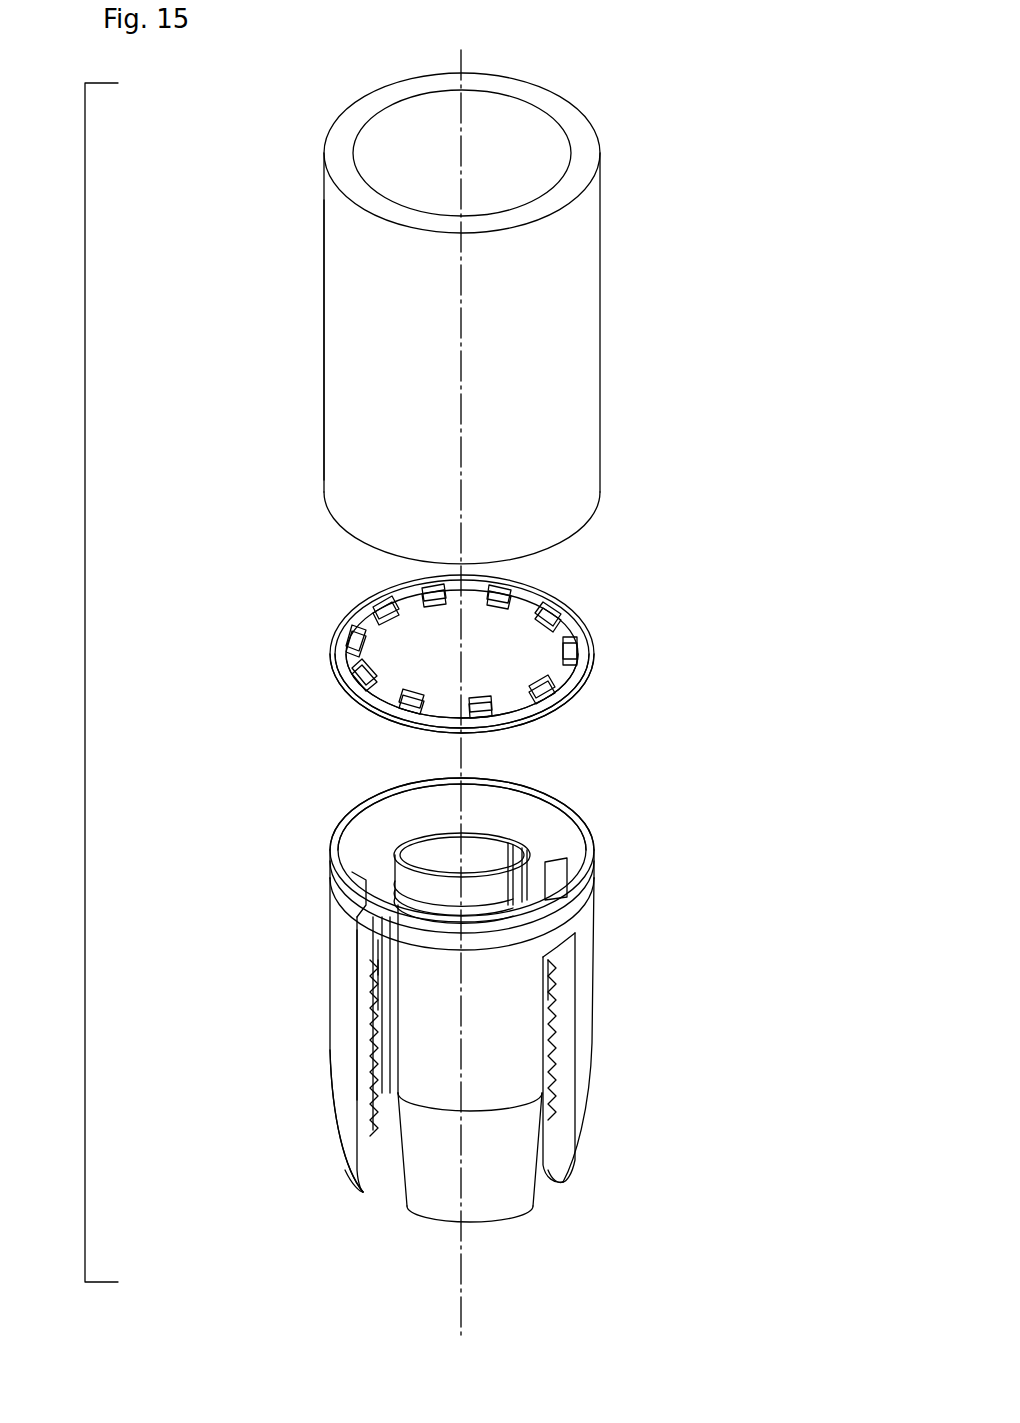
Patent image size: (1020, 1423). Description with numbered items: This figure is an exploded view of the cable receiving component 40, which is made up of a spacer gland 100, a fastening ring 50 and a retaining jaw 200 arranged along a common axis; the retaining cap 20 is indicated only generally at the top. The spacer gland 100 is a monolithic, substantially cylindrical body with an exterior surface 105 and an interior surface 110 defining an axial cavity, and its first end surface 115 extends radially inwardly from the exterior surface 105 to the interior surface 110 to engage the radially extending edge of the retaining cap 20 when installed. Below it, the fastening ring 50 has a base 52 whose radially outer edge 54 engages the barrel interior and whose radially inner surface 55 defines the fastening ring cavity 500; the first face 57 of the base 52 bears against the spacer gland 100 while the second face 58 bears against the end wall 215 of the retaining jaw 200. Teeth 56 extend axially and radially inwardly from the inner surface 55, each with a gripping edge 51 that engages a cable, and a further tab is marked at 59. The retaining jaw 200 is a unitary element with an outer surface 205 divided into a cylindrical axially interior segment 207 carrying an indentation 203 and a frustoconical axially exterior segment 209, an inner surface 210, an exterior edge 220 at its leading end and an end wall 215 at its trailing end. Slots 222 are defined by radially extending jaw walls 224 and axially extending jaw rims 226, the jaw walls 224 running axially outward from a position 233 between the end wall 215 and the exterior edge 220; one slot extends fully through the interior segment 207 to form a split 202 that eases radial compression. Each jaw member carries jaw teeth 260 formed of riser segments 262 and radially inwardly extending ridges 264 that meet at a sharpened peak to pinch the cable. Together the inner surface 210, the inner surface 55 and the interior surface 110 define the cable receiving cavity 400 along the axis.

The retaining cap 20 is at (783, 160).
The cable receiving component 40 is at (85, 686).
The spacer gland 100 is at (590, 327).
The exterior surface 105 is at (350, 330).
The interior surface 110 is at (530, 127).
The first end surface 115 is at (397, 93).
The fastening ring cavity 500 is at (482, 612).
The fastening ring 50 is at (570, 640).
The gripping edge 51 is at (472, 692).
The fastening ring base 52 is at (554, 707).
The radially outer edge 54 is at (593, 677).
The radially inner surface 55 is at (352, 625).
The teeth 56 is at (372, 680).
The first face 57 is at (337, 645).
The second face 58 is at (420, 728).
The ring tab 59 is at (393, 618).
The retaining jaw 200 is at (594, 949).
The split 202 is at (385, 1212).
The indentation 203 is at (337, 890).
The outer surface 205 is at (630, 995).
The axially interior segment 207 is at (340, 960).
The axially exterior segment 209 is at (355, 1140).
The inner surface 210 is at (393, 815).
The end wall 215 is at (338, 835).
The exterior edge 220 is at (355, 1182).
The slots 222 is at (553, 1185).
The jaw walls 224 is at (370, 1027).
The jaw rims 226 is at (562, 951).
The position 233 is at (560, 945).
The jaw teeth 260 is at (483, 842).
The riser segments 262 is at (372, 988).
The ridges 264 is at (370, 969).
The cable receiving cavity 400 is at (452, 1240).